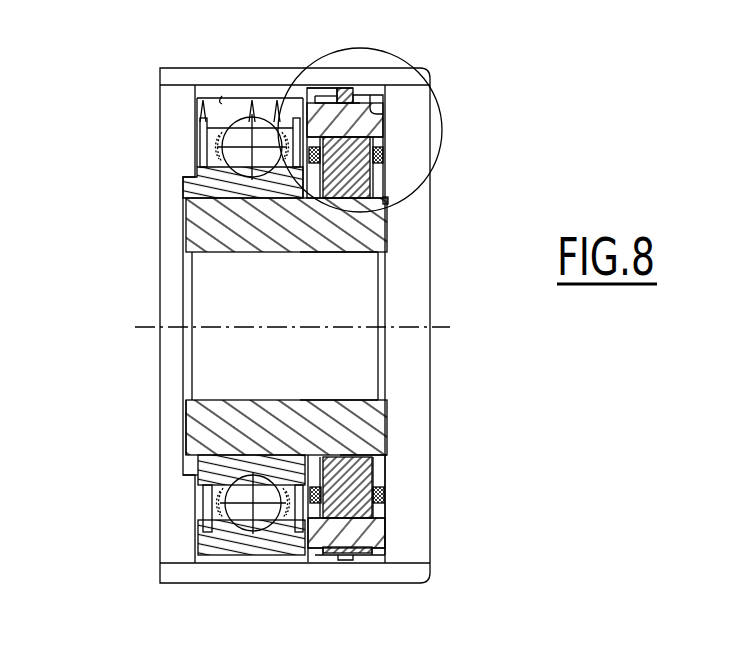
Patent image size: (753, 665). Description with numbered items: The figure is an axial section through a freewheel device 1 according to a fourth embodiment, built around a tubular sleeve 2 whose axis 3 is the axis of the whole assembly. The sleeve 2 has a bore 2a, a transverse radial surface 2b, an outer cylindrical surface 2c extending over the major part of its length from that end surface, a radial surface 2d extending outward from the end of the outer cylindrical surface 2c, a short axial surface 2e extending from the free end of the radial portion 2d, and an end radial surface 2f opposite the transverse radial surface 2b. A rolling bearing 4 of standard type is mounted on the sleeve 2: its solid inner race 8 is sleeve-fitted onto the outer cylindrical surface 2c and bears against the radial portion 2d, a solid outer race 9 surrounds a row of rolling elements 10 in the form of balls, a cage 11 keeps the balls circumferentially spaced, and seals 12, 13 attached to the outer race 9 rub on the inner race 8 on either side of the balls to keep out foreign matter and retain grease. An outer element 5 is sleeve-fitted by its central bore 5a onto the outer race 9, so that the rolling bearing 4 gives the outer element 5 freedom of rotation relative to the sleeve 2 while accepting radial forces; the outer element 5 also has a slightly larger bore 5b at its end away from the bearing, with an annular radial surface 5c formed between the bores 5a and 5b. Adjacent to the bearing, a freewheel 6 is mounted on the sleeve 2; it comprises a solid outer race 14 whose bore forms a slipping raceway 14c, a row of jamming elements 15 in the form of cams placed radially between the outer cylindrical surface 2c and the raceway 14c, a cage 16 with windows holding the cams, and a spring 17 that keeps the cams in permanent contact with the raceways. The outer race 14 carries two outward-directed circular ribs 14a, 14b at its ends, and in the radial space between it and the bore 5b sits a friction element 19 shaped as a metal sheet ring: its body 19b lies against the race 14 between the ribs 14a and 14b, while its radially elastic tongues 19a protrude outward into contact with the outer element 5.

The freewheel device 1 is at (126, 103).
The tubular sleeve 2 is at (190, 212).
The bore 2a is at (354, 306).
The transverse radial surface 2b is at (390, 404).
The outer cylindrical surface 2c is at (383, 463).
The radial surface 2d is at (188, 443).
The short axial surface 2e is at (188, 480).
The end radial surface 2f is at (185, 428).
The axis 3 is at (192, 300).
The rolling bearing 4 is at (182, 147).
The outer element 5 is at (178, 76).
The central bore 5a is at (229, 104).
The bore 5b is at (408, 125).
The annular radial surface 5c is at (328, 92).
The freewheel 6 is at (400, 176).
The inner race 8 is at (200, 468).
The outer race 9 is at (208, 535).
The rolling elements 10 is at (240, 540).
The cage 11 is at (218, 503).
The seal 12 is at (207, 522).
The seal 13 is at (264, 522).
The outer race 14 is at (352, 554).
The circular rib 14a is at (318, 558).
The circular rib 14b is at (378, 556).
The slipping raceway 14c is at (384, 514).
The jamming elements 15 is at (373, 472).
The cage 16 is at (381, 500).
The spring 17 is at (381, 487).
The friction element 19 is at (352, 98).
The radially elastic tongues 19a is at (340, 86).
The body 19b is at (367, 110).